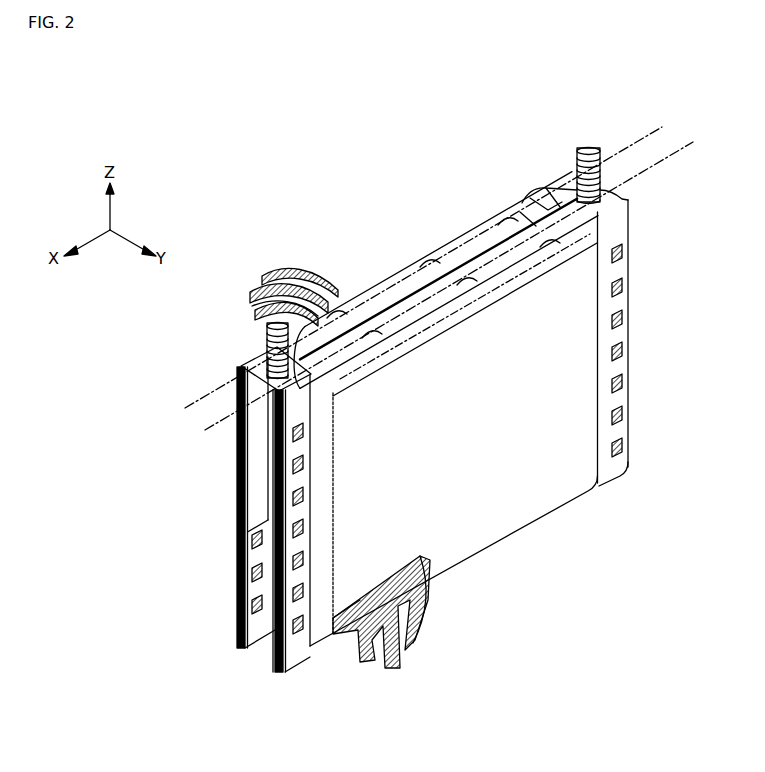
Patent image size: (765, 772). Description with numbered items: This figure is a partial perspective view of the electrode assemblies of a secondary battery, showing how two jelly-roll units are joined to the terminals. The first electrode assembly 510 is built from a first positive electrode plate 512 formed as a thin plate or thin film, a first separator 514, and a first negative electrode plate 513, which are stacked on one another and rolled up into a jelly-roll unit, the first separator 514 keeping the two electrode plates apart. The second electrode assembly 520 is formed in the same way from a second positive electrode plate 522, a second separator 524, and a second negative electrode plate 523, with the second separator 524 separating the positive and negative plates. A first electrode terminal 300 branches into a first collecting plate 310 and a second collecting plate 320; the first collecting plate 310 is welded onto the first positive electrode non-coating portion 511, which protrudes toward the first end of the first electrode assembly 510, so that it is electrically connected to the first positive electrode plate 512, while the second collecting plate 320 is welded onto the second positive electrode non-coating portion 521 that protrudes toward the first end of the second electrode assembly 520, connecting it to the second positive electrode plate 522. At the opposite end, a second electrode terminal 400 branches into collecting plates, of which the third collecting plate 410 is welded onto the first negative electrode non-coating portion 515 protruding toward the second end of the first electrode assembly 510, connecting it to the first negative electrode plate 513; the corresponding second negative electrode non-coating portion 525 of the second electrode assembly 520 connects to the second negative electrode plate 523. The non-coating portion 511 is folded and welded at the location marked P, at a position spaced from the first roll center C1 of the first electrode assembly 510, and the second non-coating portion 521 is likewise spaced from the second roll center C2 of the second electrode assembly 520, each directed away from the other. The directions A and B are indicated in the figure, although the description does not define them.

The first electrode terminal 300 is at (258, 338).
The first collecting plate 310 is at (238, 453).
The second collecting plate 320 is at (264, 484).
The second electrode terminal 400 is at (597, 147).
The third collecting plate 410 is at (548, 198).
The first electrode assembly 510 is at (481, 207).
The first positive electrode non-coating portion 511 is at (238, 633).
The first positive electrode plate 512 is at (257, 290).
The first negative electrode plate 513 is at (256, 323).
The first separator 514 is at (266, 270).
The first negative electrode non-coating portion 515 is at (575, 186).
The second electrode assembly 520 is at (533, 213).
The second positive electrode non-coating portion 521 is at (280, 672).
The second positive electrode plate 522 is at (398, 668).
The second negative electrode plate 523 is at (352, 650).
The second separator 524 is at (372, 660).
The second negative electrode non-coating portion 525 is at (633, 231).
The folded and welded portion P is at (625, 318).
The first roll center C1 is at (661, 128).
The second roll center C2 is at (693, 146).
The direction A is at (408, 208).
The direction B is at (225, 541).